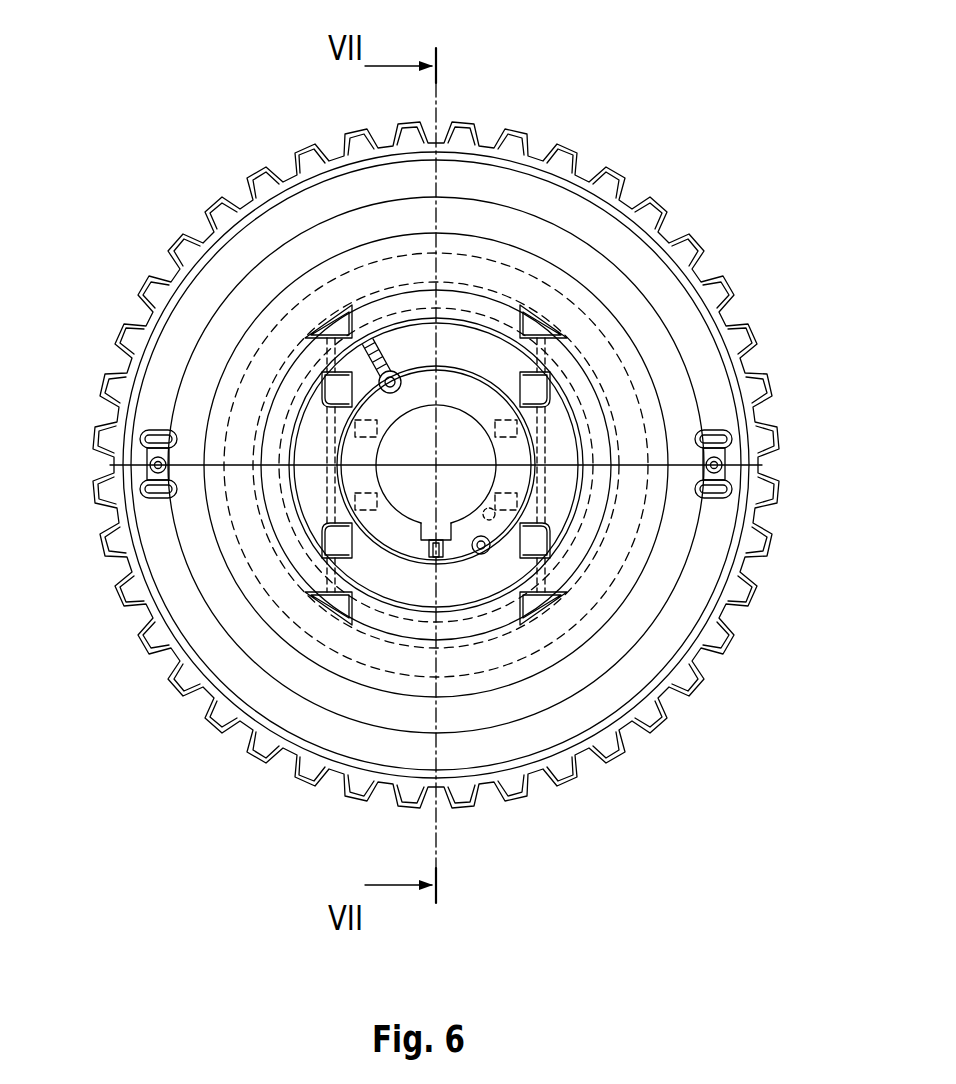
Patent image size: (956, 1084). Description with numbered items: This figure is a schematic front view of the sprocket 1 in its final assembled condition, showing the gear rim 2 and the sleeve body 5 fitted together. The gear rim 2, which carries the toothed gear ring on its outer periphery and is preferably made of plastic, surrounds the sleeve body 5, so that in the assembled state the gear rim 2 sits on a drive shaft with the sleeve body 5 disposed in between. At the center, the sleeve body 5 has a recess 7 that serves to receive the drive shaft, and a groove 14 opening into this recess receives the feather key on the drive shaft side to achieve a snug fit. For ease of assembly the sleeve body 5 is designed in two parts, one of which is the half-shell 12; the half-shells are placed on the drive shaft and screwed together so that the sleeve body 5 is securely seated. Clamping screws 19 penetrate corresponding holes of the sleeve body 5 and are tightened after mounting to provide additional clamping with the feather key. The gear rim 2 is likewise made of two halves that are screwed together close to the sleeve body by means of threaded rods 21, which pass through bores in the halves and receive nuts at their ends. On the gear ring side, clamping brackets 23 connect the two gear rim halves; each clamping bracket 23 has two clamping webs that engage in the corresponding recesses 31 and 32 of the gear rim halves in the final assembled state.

The sprocket 1 is at (732, 253).
The gear rim 2 is at (602, 290).
The sleeve body 5 is at (409, 537).
The recess 7 is at (479, 451).
The half-shell 12 is at (478, 398).
The groove 14 is at (459, 539).
The clamping screw 19 is at (472, 546).
The threaded rod 21 is at (333, 490).
The clamping bracket 23 is at (120, 467).
The recess 31 is at (138, 440).
The recess 32 is at (138, 488).